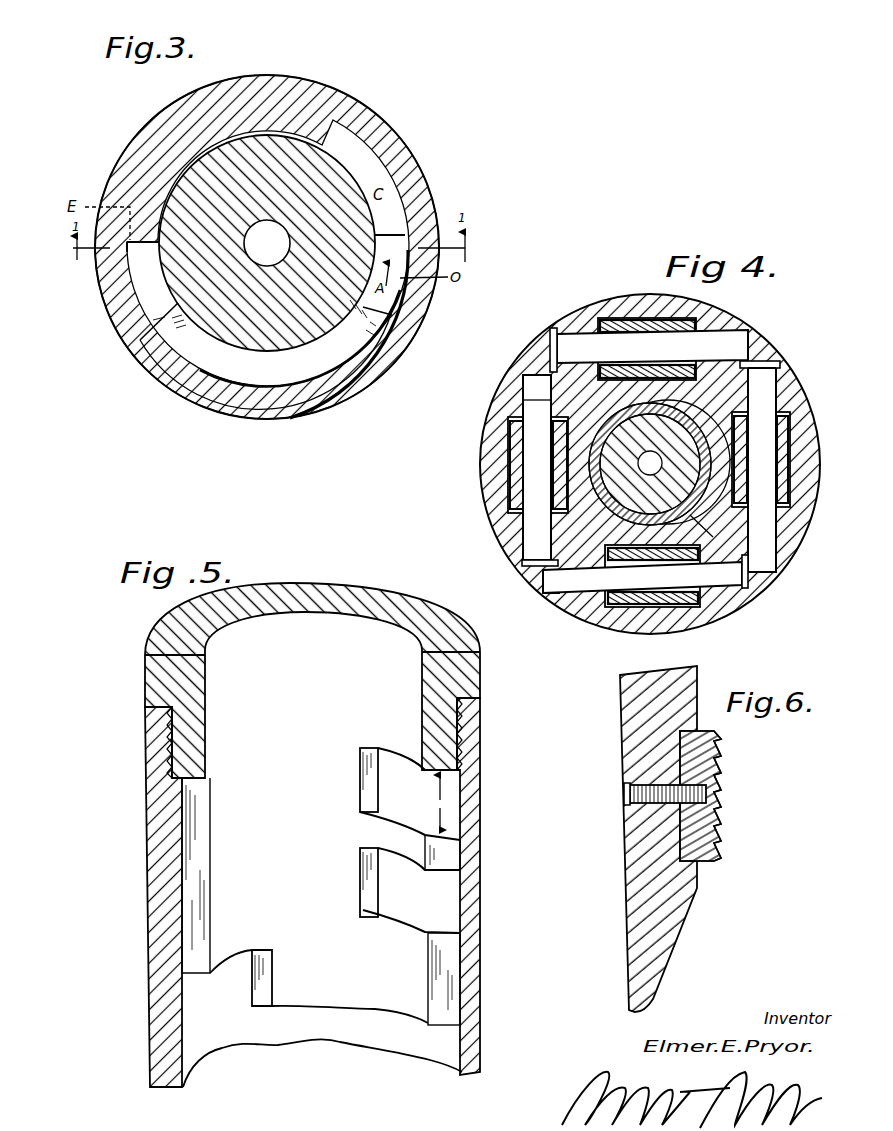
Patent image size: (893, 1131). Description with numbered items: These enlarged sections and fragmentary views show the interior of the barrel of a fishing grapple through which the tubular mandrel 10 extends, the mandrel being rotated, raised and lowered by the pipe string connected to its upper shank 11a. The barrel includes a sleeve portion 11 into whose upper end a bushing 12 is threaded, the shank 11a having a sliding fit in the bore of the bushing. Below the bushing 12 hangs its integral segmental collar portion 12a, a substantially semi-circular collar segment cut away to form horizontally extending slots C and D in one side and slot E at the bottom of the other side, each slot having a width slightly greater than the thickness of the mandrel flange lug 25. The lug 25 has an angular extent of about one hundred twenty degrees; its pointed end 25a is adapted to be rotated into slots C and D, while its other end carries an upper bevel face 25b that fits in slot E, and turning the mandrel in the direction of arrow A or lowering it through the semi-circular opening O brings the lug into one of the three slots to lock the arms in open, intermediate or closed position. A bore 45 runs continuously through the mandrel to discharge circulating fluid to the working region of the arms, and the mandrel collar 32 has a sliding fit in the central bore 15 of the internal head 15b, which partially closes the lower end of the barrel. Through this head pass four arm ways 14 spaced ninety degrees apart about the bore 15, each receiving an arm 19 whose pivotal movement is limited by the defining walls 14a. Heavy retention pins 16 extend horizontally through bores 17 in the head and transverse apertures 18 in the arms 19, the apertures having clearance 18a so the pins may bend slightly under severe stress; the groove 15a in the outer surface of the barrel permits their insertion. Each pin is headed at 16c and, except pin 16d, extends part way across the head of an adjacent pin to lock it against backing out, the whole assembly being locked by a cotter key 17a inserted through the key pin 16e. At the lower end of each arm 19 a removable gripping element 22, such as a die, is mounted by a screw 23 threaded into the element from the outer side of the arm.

In FIG. 4, the tubular mandrel 10 is at (737, 404).
In FIG. 3, the sleeve portion 11 is at (372, 389).
In FIG. 5, the sleeve portion 11 is at (478, 884).
In FIG. 3, the upper shank 11a is at (172, 278).
In FIG. 5, the bushing 12 is at (478, 680).
In FIG. 5, the segmental collar portion 12a is at (183, 738).
In FIG. 4, the arm ways 14 is at (622, 328).
In FIG. 4, the defining walls 14a is at (790, 483).
In FIG. 4, the central bore 15 is at (668, 522).
In FIG. 4, the groove 15a is at (768, 358).
In FIG. 4, the internal head 15b is at (713, 537).
In FIG. 4, the retention pins 16 is at (649, 461).
In FIG. 4, the pin head 16c is at (550, 338).
In FIG. 4, the pin 16d is at (530, 403).
In FIG. 4, the key pin 16e is at (652, 348).
In FIG. 4, the bores 17 is at (767, 365).
In FIG. 4, the cotter key 17a is at (742, 360).
In FIG. 4, the transverse apertures 18 is at (687, 322).
In FIG. 4, the clearance 18a is at (613, 330).
In FIG. 4, the arms 19 is at (713, 327).
In FIG. 6, the arms 19 is at (638, 873).
In FIG. 6, the removable gripping element 22 is at (708, 826).
In FIG. 6, the screw 23 is at (624, 802).
In FIG. 3, the mandrel flange lug 25 is at (265, 361).
In FIG. 3, the pointed end 25a is at (372, 317).
In FIG. 3, the upper bevel face 25b is at (158, 323).
In FIG. 4, the mandrel collar 32 is at (608, 402).
In FIG. 3, the bore 45 is at (267, 243).
In FIG. 4, the bore 45 is at (650, 464).